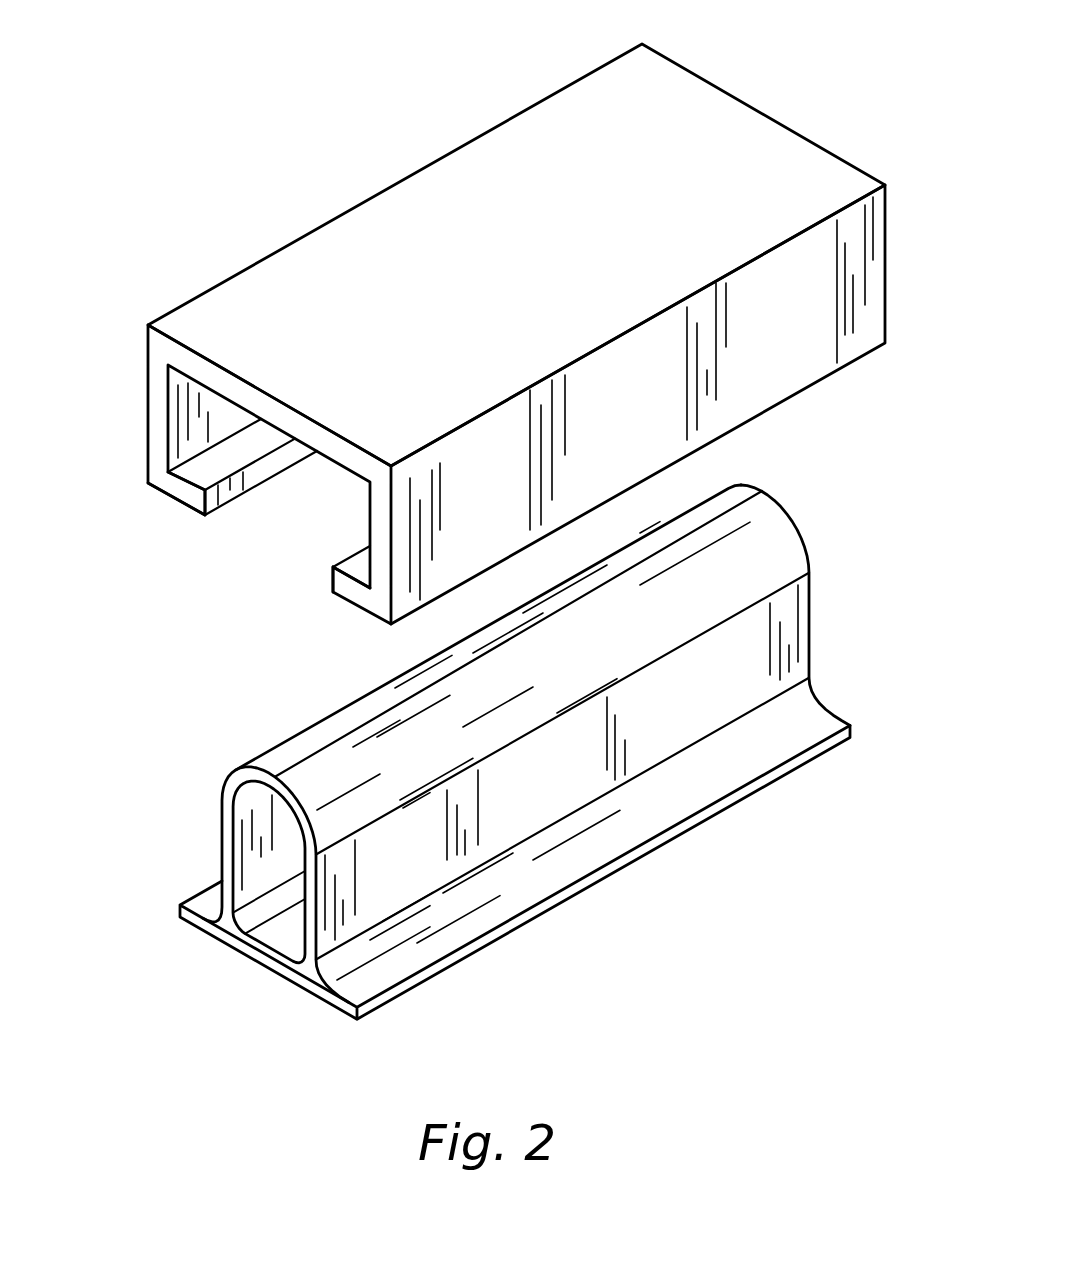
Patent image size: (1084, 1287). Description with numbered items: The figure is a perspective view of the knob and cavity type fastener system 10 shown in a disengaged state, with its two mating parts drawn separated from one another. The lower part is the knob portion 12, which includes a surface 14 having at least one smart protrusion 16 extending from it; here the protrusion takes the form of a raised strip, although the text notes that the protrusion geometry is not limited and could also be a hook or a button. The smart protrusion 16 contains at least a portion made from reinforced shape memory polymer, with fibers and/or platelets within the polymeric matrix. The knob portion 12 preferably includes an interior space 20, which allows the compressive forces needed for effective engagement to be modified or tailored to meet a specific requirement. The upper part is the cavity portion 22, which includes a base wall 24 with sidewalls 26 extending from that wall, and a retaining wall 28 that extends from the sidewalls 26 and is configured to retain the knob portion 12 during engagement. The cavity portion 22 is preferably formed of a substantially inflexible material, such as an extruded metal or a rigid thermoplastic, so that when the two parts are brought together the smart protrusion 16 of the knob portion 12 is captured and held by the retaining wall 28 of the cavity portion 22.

The knob and cavity type fastener system 10 is at (197, 150).
The knob portion 12 is at (237, 978).
The surface 14 is at (545, 888).
The smart protrusion 16 is at (220, 830).
The interior space 20 is at (280, 858).
The cavity portion 22 is at (173, 522).
The base wall 24 is at (270, 297).
The sidewalls 26 is at (758, 350).
The retaining wall 28 is at (222, 462).